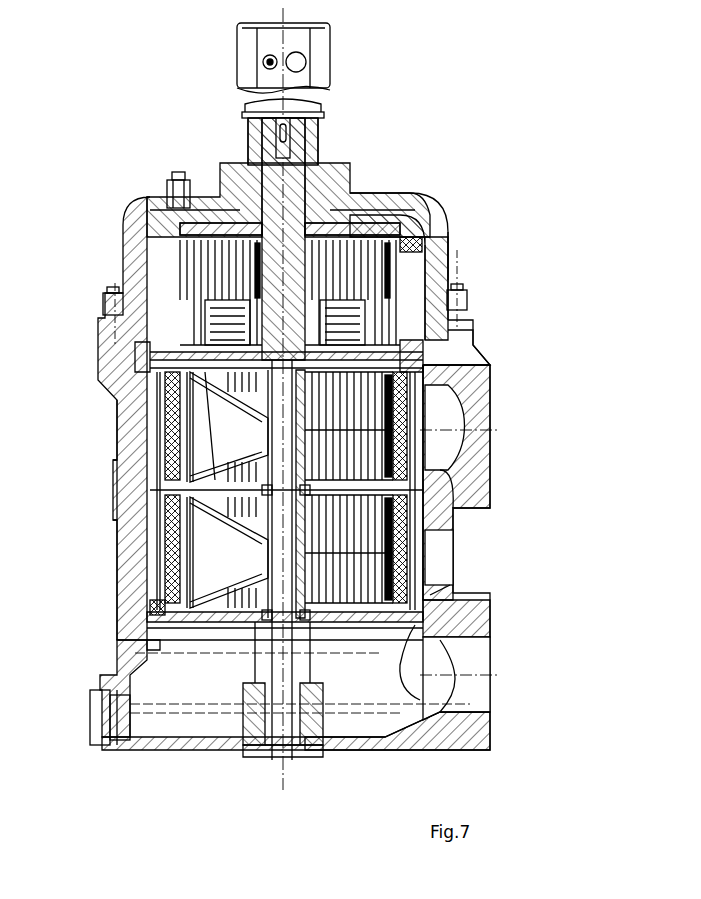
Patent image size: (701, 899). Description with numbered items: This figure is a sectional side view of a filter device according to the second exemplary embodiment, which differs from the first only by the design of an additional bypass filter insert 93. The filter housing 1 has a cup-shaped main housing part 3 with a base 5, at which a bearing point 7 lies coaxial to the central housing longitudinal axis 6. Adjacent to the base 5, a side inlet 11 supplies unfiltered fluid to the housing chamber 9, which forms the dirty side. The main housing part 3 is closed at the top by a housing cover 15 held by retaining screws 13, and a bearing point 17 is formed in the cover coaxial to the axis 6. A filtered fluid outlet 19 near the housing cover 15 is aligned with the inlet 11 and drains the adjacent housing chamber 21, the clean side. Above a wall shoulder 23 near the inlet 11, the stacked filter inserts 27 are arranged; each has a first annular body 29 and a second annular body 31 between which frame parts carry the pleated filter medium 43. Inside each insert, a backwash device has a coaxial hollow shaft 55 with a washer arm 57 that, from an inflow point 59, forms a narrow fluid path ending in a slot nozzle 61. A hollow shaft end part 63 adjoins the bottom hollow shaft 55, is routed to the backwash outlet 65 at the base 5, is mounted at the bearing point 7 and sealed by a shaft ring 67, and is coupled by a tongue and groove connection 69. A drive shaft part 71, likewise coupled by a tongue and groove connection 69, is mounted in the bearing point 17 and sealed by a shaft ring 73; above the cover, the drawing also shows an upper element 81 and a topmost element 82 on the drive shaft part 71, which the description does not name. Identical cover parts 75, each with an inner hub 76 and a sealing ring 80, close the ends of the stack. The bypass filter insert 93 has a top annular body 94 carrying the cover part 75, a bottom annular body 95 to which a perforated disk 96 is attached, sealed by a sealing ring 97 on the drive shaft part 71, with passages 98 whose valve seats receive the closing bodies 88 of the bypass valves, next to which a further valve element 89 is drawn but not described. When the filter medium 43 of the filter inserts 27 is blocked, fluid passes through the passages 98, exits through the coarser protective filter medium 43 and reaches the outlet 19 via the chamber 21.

The filter housing 1 is at (490, 296).
The main housing part 3 is at (125, 463).
The base 5 is at (200, 750).
The central housing longitudinal axis 6 is at (280, 775).
The bearing point 7 is at (290, 760).
The housing chamber 9 is at (140, 635).
The side inlet 11 is at (470, 648).
The retaining screws 13 is at (110, 295).
The housing cover 15 is at (137, 215).
The bearing point 17 is at (318, 205).
The filtered fluid outlet 19 is at (458, 395).
The housing chamber 21 is at (440, 548).
The wall shoulder 23 is at (410, 662).
The filter inserts 27 is at (455, 470).
The first annular body 29 is at (140, 355).
The second annular body 31 is at (410, 490).
The filter medium 43 is at (180, 255).
The hollow shaft 55 is at (283, 488).
The washer arm 57 is at (232, 476).
The inflow point 59 is at (240, 425).
The slot nozzle 61 is at (150, 440).
The hollow shaft end part 63 is at (325, 670).
The backwash outlet 65 is at (265, 758).
The shaft ring 67 is at (243, 694).
The tongue and groove connection 69 is at (262, 388).
The drive shaft part 71 is at (262, 158).
The shaft ring 73 is at (330, 215).
The cover part 75 is at (372, 205).
The inner hub 76 is at (258, 630).
The sealing ring 80 is at (418, 238).
The connector housing 81 is at (300, 135).
The plug 82 is at (320, 60).
The closing bodies 88 is at (414, 312).
The brush spring 89 is at (414, 278).
The bypass filter insert 93 is at (215, 220).
The top annular body 94 is at (410, 230).
The bottom annular body 95 is at (440, 362).
The perforated disk 96 is at (192, 385).
The sealing ring 97 is at (285, 360).
The passages 98 is at (200, 375).